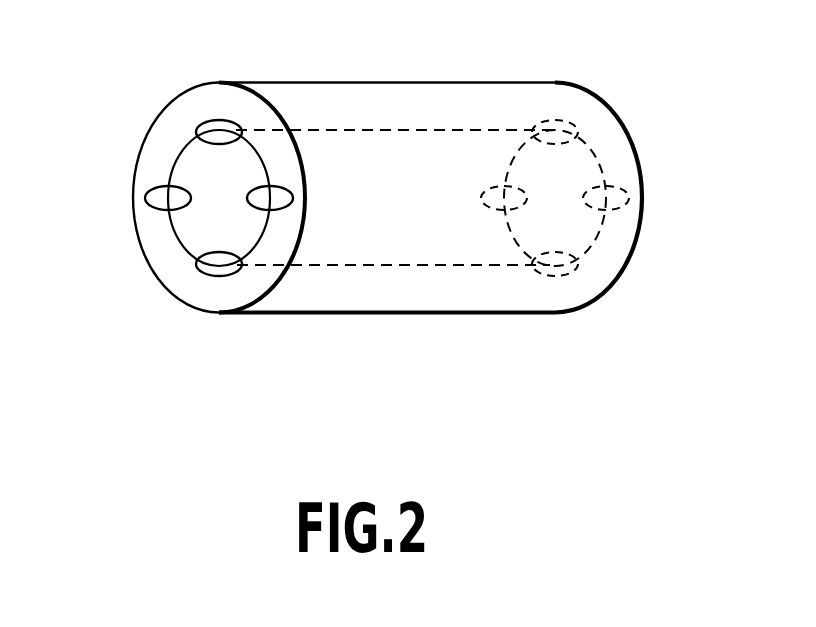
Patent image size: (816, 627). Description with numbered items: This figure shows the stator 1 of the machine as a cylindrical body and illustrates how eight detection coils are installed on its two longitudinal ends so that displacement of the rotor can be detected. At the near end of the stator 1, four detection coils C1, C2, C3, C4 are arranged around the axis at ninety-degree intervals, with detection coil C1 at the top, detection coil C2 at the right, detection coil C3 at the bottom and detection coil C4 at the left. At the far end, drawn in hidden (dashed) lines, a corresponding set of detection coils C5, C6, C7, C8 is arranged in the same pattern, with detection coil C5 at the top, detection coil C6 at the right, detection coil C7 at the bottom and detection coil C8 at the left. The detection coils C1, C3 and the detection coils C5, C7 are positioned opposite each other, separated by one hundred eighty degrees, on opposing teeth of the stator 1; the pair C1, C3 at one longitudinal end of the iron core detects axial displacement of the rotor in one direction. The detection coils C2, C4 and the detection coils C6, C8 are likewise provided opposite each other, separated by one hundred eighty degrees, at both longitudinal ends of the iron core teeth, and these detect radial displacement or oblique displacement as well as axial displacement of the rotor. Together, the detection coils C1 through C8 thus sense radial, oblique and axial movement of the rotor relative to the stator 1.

The stator 1 is at (385, 82).
The detection coil C1 is at (218, 119).
The detection coil C2 is at (270, 211).
The detection coil C3 is at (218, 277).
The detection coil C4 is at (160, 193).
The detection coil C5 is at (560, 118).
The detection coil C6 is at (623, 188).
The detection coil C7 is at (560, 275).
The detection coil C8 is at (508, 213).